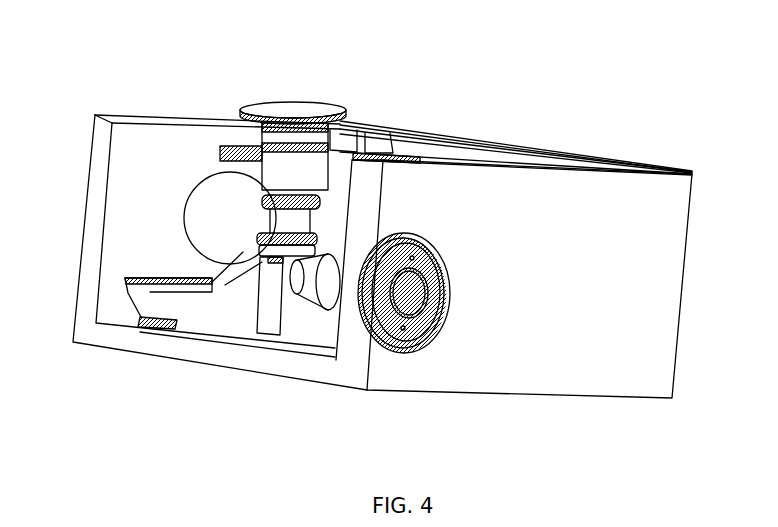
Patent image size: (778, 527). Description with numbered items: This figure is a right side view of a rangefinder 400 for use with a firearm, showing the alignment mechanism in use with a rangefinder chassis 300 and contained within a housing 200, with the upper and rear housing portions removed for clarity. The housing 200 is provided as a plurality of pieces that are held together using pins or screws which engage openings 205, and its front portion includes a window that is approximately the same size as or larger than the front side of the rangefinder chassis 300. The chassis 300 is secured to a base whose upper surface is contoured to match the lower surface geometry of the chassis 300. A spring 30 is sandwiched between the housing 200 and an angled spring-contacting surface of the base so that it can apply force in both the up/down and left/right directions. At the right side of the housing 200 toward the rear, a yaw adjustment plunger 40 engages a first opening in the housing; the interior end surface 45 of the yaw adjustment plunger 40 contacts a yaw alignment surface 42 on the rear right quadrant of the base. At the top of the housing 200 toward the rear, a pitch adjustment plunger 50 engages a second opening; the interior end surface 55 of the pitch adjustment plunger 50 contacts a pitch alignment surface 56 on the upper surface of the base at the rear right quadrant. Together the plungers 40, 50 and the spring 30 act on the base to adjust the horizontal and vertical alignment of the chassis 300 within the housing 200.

The rangefinder 400 is at (583, 72).
The spring 30 is at (130, 330).
The housing 200 is at (658, 280).
The openings 205 is at (657, 167).
The rangefinder chassis 300 is at (407, 125).
The pitch adjustment plunger 50 is at (340, 110).
The interior end surface 55 is at (293, 225).
The pitch alignment surface 56 is at (233, 232).
The interior end surface 45 is at (278, 265).
The yaw alignment surface 42 is at (310, 320).
The yaw adjustment plunger 40 is at (437, 292).